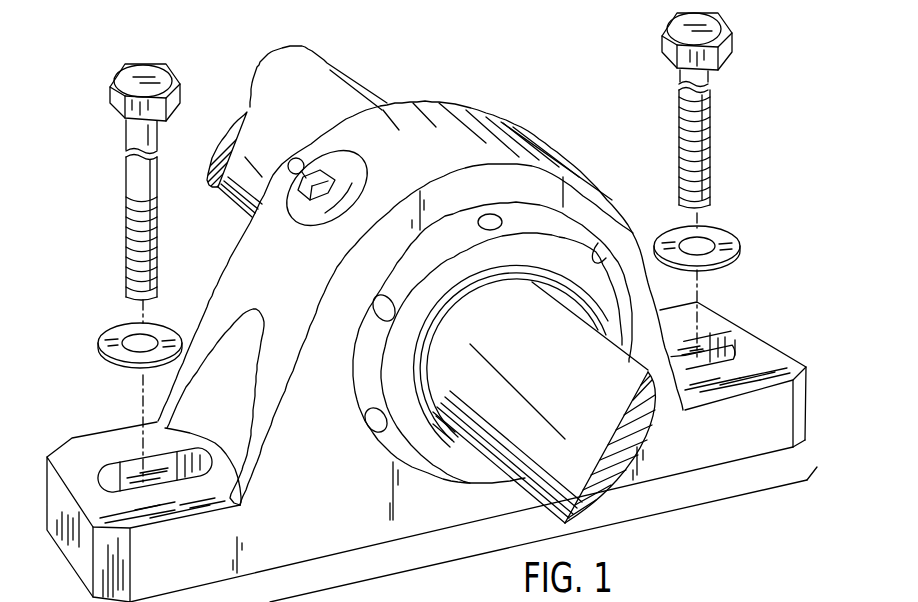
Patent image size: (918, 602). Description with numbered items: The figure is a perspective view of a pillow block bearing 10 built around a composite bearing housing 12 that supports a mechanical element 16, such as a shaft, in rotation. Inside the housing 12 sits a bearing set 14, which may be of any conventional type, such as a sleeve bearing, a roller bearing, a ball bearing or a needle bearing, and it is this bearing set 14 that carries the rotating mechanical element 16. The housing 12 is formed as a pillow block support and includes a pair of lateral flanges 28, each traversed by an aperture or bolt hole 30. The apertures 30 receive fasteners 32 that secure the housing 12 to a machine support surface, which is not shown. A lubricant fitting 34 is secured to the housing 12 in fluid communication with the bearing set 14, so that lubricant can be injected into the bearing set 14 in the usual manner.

The bearing 10 is at (80, 362).
The composite bearing housing 12 is at (453, 113).
The bearing set 14 is at (536, 217).
The mechanical element 16 is at (346, 77).
The lateral flanges 28 is at (89, 443).
The apertures or bolt holes 30 is at (100, 467).
The fasteners 32 is at (133, 137).
The lubricant fitting 34 is at (305, 158).